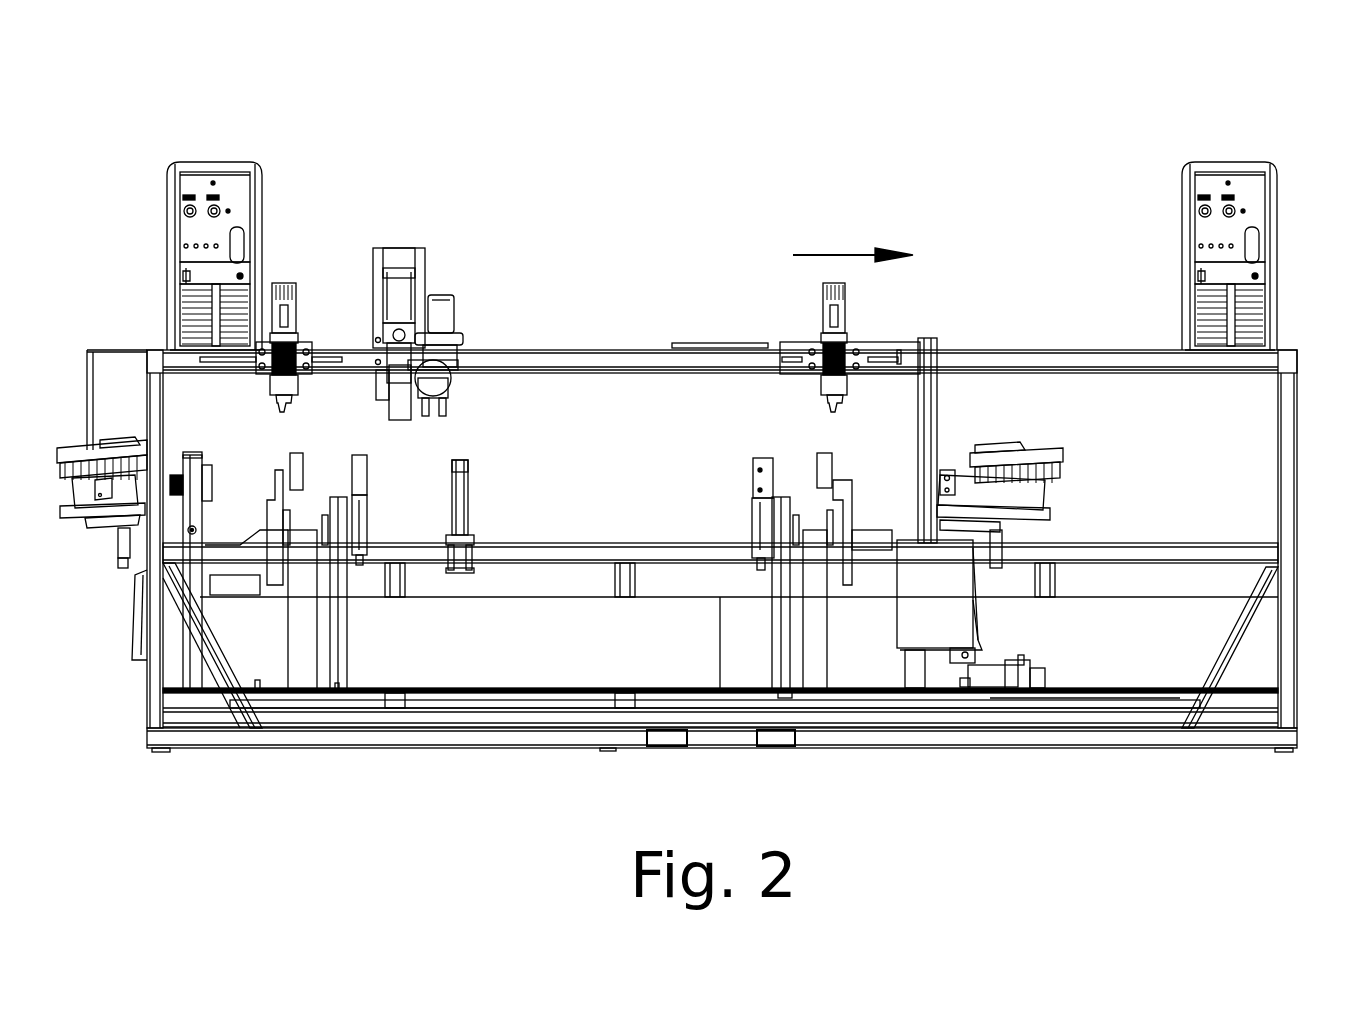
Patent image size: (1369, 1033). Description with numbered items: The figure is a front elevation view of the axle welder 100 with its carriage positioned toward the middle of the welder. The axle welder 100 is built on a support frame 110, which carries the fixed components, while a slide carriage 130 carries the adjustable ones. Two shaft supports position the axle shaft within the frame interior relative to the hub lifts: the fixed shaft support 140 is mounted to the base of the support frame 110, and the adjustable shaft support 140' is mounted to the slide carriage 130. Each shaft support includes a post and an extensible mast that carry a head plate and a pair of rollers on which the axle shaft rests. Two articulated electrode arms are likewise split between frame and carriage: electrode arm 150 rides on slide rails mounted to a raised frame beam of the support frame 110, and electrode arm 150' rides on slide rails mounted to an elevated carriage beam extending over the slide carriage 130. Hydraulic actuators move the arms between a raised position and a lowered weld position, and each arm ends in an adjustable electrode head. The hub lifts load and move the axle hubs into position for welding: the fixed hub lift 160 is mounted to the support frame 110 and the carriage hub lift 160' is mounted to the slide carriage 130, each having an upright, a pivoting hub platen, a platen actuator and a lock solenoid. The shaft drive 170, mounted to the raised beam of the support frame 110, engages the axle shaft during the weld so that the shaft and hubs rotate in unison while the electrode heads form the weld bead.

The axle welder 100 is at (1057, 108).
The support frame 110 is at (360, 750).
The slide carriage 130 is at (880, 685).
The fixed shaft support 140 is at (268, 571).
The adjustable shaft support 140' is at (822, 624).
The articulated electrode arm 150 is at (287, 344).
The articulated electrode arm 150' is at (804, 408).
The fixed hub lift 160 is at (102, 502).
The carriage hub lift 160' is at (1040, 505).
The shaft drive 170 is at (428, 280).